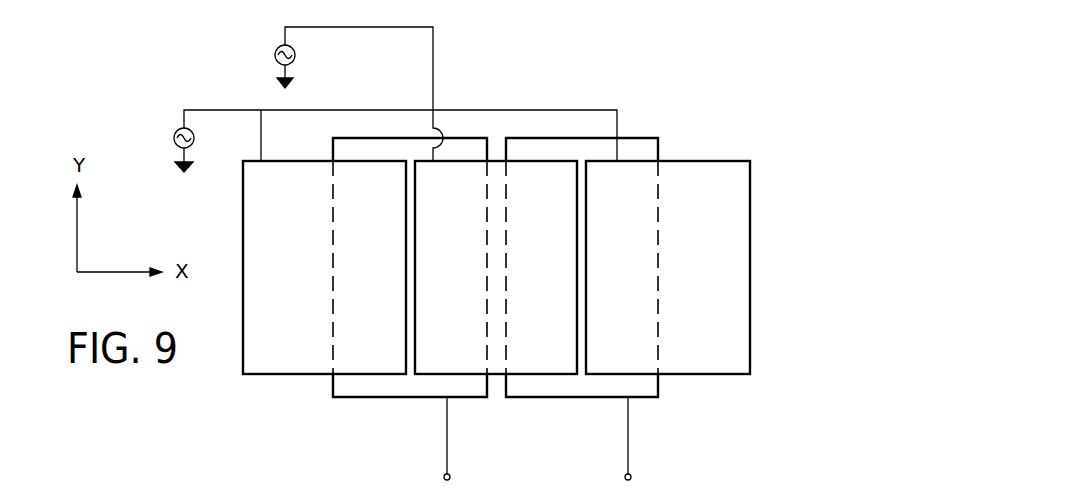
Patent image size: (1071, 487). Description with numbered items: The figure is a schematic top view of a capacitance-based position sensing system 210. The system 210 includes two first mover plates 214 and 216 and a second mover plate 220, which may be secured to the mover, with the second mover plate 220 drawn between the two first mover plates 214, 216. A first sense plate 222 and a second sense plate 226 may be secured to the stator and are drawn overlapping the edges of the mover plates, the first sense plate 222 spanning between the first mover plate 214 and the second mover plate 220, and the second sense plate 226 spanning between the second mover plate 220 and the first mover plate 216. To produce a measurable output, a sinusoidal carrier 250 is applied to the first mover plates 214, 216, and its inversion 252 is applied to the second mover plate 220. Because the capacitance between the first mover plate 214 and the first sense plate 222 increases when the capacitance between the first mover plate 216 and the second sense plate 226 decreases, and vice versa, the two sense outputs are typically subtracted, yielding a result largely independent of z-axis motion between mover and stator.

The position sensing system 210 is at (778, 90).
The M1 plate 214 is at (262, 378).
The M1 plate 216 is at (735, 375).
The M2 plate 220 is at (558, 158).
The S1 plate 222 is at (345, 398).
The S2 plate 226 is at (647, 400).
The sinusoidal carrier 250 is at (175, 130).
The inversion of the sinusoidal carrier 252 is at (297, 47).